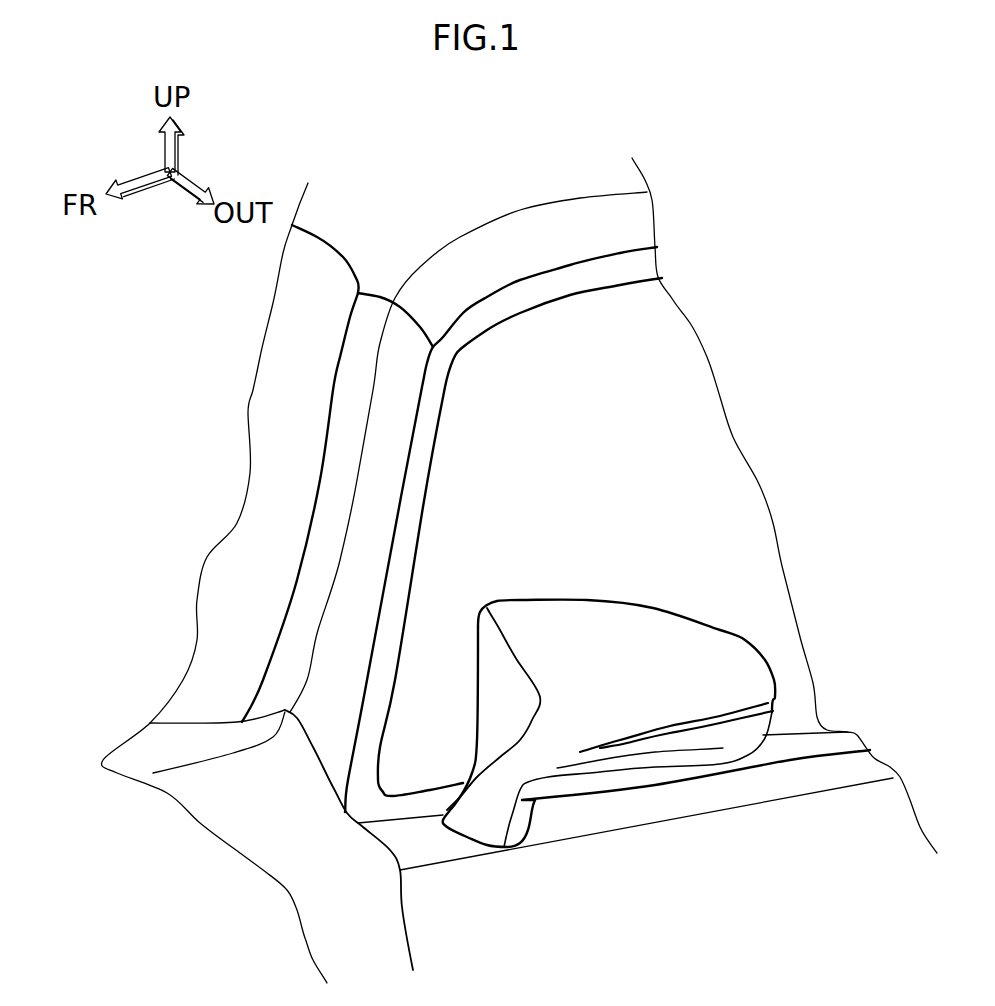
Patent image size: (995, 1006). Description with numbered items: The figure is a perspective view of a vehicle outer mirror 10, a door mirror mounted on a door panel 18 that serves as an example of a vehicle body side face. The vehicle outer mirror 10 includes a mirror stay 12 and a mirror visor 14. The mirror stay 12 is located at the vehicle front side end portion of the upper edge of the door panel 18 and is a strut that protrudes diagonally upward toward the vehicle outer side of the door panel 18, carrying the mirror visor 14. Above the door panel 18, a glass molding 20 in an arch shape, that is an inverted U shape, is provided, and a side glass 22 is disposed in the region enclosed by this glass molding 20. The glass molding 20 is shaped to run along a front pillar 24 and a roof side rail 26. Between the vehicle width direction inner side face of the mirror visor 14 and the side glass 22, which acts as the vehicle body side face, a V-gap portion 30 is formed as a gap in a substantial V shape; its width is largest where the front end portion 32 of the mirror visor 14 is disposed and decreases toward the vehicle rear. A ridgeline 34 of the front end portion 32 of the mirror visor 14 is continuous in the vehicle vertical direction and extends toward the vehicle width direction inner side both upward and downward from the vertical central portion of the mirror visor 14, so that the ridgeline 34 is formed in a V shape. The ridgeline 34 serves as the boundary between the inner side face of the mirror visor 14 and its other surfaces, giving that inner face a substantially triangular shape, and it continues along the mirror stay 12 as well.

The vehicle outer mirror 10 is at (684, 569).
The mirror stay 12 is at (533, 817).
The mirror visor 14 is at (619, 593).
The door panel 18 is at (423, 835).
The glass molding 20 is at (427, 470).
The side glass 22 is at (563, 427).
The front pillar 24 is at (317, 478).
The roof side rail 26 is at (542, 227).
The V-gap portion 30 is at (459, 628).
The front end portion 32 is at (542, 698).
The ridgeline 34 is at (513, 650).